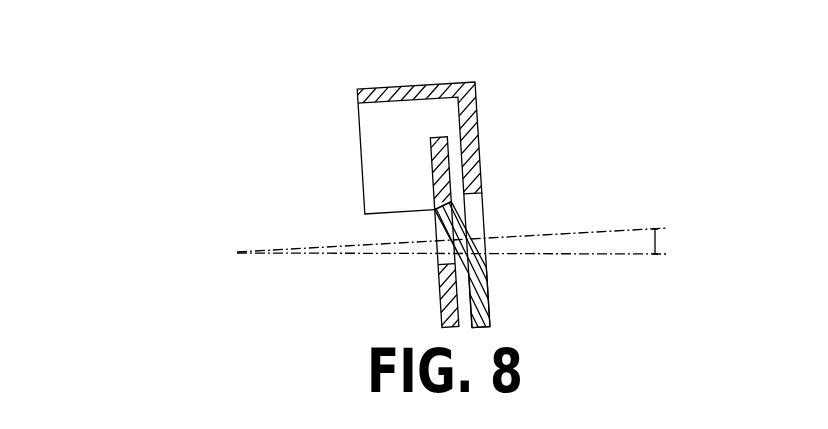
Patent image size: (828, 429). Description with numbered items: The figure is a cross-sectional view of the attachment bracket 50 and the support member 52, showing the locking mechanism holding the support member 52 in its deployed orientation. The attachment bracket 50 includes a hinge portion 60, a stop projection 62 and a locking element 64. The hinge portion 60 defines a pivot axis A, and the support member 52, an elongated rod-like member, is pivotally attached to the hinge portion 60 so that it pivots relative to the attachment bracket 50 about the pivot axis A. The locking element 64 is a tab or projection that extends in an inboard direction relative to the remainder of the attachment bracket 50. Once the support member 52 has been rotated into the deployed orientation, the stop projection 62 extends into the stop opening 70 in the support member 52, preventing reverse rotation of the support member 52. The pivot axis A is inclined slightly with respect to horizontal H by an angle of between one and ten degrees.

The attachment bracket 50 is at (426, 195).
The support member 52 is at (438, 288).
The hinge portion 60 is at (476, 141).
The stop projection 62 is at (382, 214).
The locking element 64 is at (460, 228).
The stop opening 70 is at (435, 238).
The pivot axis A is at (559, 233).
The horizontal H is at (559, 258).